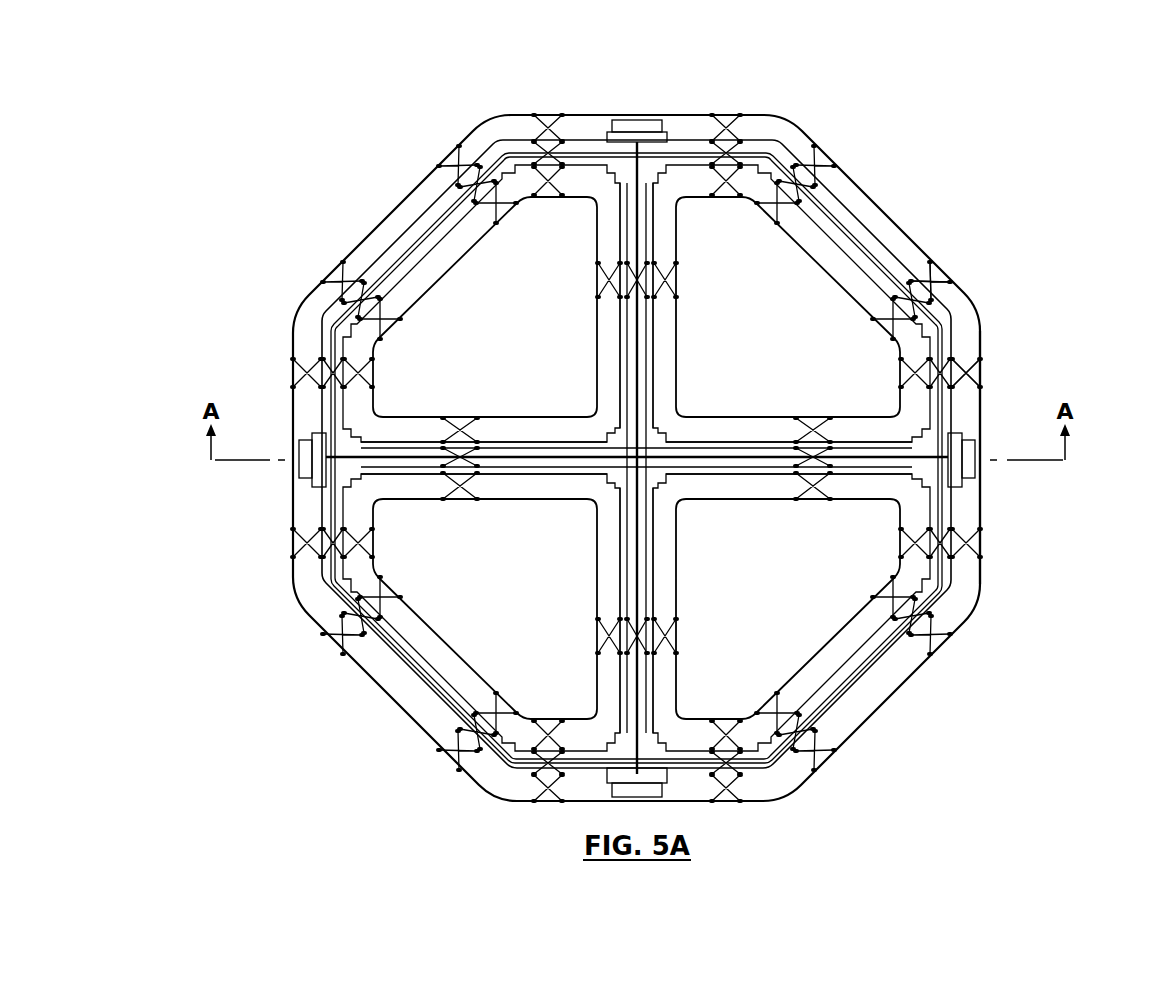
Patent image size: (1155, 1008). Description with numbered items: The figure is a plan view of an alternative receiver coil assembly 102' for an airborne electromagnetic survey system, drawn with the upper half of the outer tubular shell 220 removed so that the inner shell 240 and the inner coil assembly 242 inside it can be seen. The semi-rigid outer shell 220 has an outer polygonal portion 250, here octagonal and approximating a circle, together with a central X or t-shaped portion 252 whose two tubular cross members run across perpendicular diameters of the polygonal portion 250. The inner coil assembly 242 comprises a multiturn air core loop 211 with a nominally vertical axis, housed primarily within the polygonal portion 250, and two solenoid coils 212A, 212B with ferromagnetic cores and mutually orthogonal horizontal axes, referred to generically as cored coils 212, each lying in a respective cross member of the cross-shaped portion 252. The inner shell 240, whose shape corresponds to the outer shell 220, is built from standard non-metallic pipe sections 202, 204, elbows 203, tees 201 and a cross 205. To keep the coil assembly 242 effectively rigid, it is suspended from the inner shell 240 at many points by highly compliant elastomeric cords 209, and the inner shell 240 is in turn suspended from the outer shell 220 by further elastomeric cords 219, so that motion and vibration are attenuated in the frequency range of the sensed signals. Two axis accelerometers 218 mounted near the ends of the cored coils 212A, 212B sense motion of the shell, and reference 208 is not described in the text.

The receiver coil assembly 102' is at (607, 458).
The tees 201 is at (655, 120).
The pipe sections 202 is at (746, 138).
The elbows 203 is at (772, 142).
The pipe sections 204 is at (680, 228).
The cross 205 is at (660, 435).
The center cross member 208 is at (962, 458).
The elastomeric cords 209 is at (924, 289).
The multiturn air core loop 211 is at (852, 237).
The solenoid coils 212 is at (656, 332).
The solenoid coil 212A is at (508, 460).
The solenoid coil 212B is at (680, 528).
The two axis accelerometers 218 is at (631, 120).
The elastomeric cords 219 is at (978, 373).
The outer tubular shell 220 is at (983, 337).
The inner shell 240 is at (683, 255).
The inner coil assembly 242 is at (548, 458).
The outer polygonal portion 250 is at (363, 236).
The central X or t-shaped portion 252 is at (708, 500).